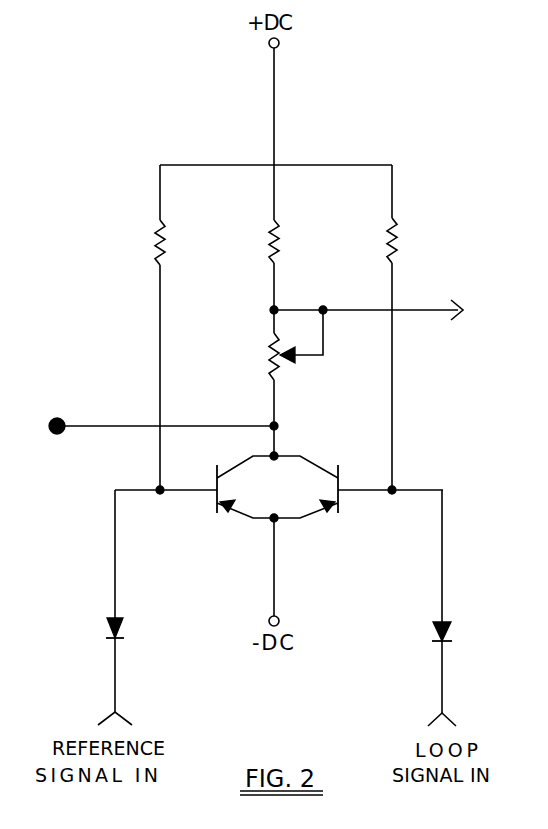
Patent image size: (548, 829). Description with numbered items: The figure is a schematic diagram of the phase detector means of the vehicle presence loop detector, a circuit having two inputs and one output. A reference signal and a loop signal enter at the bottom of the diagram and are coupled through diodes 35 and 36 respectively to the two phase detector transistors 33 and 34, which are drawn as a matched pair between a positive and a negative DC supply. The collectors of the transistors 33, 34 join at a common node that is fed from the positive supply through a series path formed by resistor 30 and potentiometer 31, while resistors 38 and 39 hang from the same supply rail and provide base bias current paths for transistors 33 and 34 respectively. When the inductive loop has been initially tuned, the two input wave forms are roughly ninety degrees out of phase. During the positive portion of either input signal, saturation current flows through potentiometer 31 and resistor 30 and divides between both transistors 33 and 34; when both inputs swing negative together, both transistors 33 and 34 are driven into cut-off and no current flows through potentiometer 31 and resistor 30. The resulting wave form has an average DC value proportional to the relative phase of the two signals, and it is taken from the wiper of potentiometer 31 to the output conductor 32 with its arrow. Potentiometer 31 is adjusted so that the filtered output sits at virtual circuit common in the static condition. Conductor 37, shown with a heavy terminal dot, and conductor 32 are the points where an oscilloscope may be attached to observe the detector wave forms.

The resistor 30 is at (263, 241).
The potentiometer 31 is at (285, 345).
The conductor 32 is at (366, 304).
The transistor 33 is at (194, 478).
The transistor 34 is at (358, 478).
The diode 35 is at (102, 607).
The diode 36 is at (458, 608).
The conductor 37 is at (163, 417).
The resistor 38 is at (146, 242).
The resistor 39 is at (407, 240).